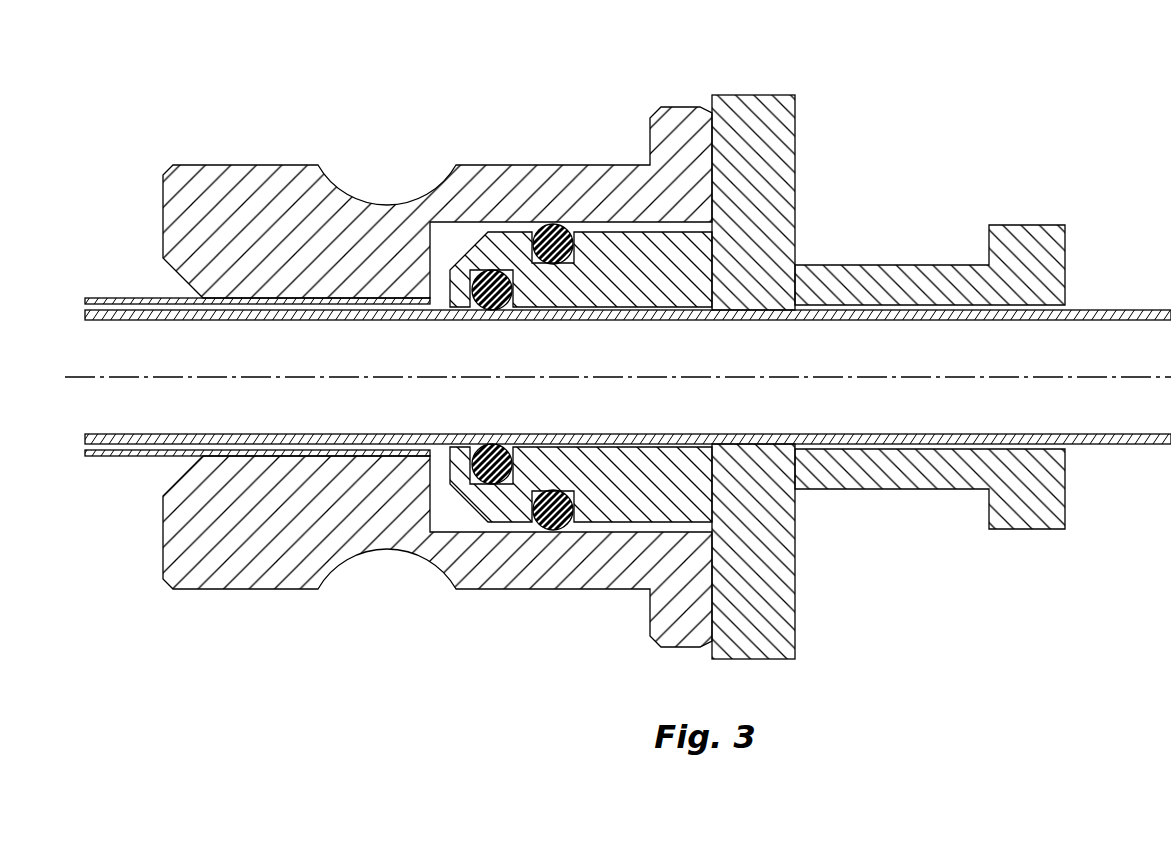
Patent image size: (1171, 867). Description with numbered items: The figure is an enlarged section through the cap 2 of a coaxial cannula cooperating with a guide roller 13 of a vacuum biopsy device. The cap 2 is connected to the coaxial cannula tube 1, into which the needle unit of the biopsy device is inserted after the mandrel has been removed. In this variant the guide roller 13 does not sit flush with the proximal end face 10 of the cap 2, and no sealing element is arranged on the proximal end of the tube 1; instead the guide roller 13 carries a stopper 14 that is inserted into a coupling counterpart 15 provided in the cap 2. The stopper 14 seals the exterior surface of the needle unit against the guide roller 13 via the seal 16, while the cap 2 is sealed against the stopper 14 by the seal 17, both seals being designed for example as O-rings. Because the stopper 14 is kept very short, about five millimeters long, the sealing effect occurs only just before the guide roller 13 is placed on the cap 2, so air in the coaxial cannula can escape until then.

The coaxial cannula tube 1 is at (148, 297).
The cap 2 is at (350, 213).
The proximal end face 10 is at (888, 344).
The guide roller 13 is at (783, 170).
The stopper 14 is at (647, 513).
The coupling counterpart 15 is at (485, 180).
The seal 16 is at (497, 278).
The seal 17 is at (556, 232).